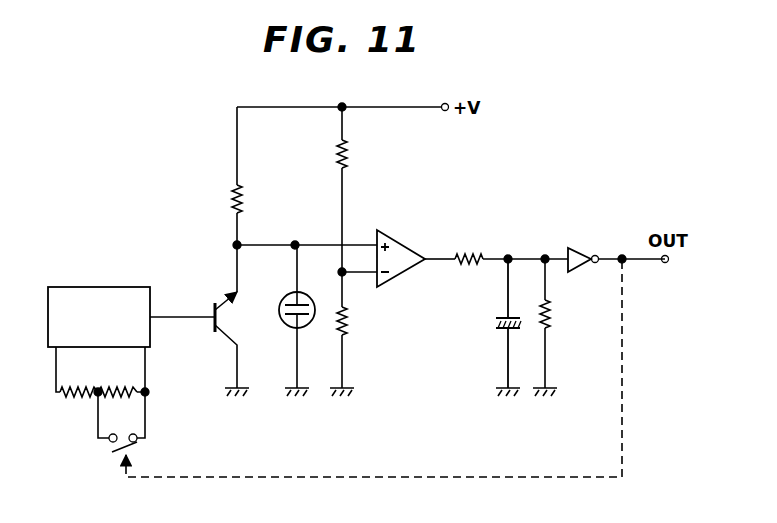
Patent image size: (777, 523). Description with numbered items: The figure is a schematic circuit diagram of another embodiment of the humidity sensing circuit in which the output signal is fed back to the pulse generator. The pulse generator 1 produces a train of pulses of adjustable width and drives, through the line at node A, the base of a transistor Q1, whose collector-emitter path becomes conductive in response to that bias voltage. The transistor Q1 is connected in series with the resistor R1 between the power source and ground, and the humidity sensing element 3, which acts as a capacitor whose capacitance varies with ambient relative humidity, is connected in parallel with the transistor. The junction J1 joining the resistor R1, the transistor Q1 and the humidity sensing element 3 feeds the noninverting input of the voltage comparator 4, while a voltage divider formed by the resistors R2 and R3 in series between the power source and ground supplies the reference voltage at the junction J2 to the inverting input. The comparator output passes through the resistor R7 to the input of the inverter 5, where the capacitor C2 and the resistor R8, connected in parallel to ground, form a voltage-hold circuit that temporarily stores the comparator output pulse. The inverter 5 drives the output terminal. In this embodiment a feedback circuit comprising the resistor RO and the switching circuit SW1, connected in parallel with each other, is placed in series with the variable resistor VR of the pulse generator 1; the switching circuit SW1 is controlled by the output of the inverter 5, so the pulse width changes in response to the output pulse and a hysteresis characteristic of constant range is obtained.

The pulse generator 1 is at (108, 287).
The node A (pulse generator output line) A is at (183, 316).
The junction J1 is at (234, 244).
The junction J2 is at (341, 272).
The transistor Q1 is at (229, 318).
The humidity sensing element 3 is at (304, 326).
The voltage comparator 4 is at (403, 242).
The inverter 5 is at (578, 251).
The resistor R1 is at (242, 197).
The resistor R2 is at (346, 148).
The resistor R3 is at (347, 320).
The resistor R7 is at (470, 256).
The resistor R8 is at (549, 320).
The capacitor C2 is at (495, 325).
The resistor R0 RO is at (113, 388).
The variable resistor VR is at (87, 372).
The switching circuit SW1 is at (140, 447).